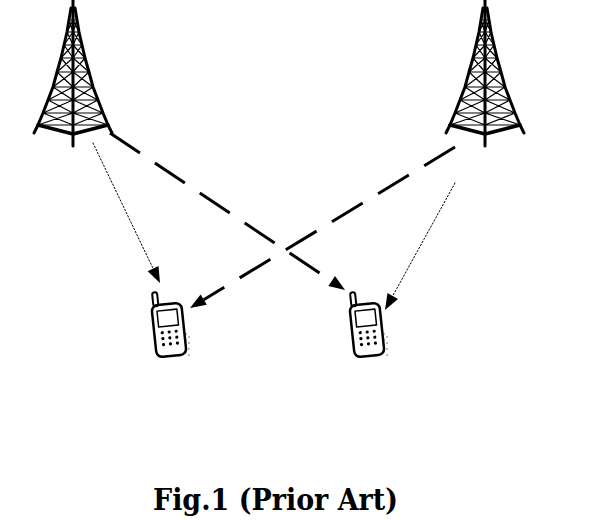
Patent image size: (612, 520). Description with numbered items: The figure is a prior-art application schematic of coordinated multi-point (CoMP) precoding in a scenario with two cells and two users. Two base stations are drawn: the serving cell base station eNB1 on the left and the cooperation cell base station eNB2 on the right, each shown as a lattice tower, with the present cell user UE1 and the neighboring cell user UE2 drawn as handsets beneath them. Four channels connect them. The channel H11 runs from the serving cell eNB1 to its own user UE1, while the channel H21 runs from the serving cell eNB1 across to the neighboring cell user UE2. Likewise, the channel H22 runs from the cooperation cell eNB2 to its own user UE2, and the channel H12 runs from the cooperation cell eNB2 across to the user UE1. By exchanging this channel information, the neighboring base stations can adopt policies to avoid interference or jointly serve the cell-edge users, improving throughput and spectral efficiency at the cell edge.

The serving cell base station eNB1 is at (73, 88).
The cooperation cell base station eNB2 is at (485, 88).
The present cell user UE1 is at (170, 347).
The neighboring cell user UE2 is at (370, 347).
The channel from serving cell to present cell user H11 is at (122, 213).
The channel from cooperation cell to neighboring cell user H12 is at (322, 227).
The channel from serving cell to neighboring cell user H21 is at (227, 211).
The channel from cooperation cell to present cell user H22 is at (430, 246).